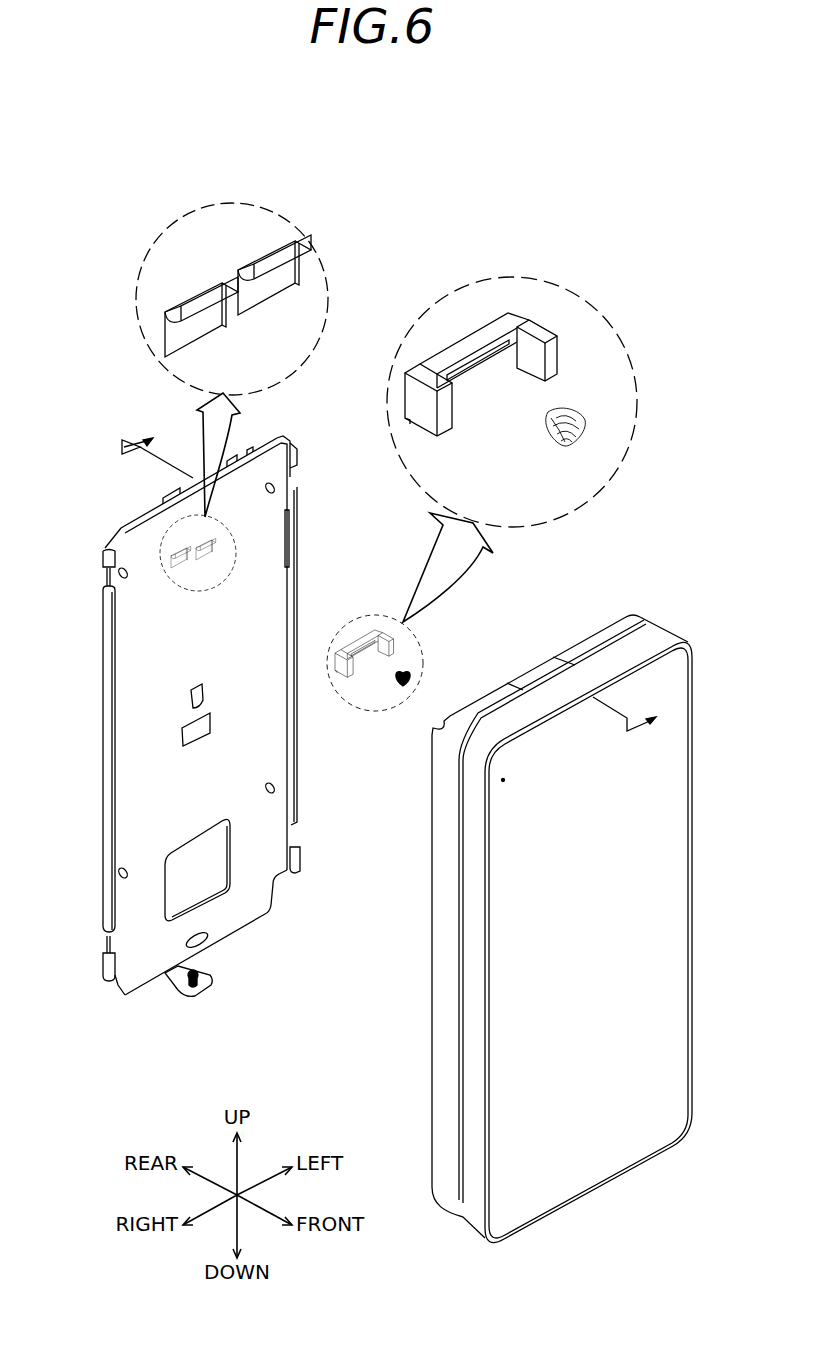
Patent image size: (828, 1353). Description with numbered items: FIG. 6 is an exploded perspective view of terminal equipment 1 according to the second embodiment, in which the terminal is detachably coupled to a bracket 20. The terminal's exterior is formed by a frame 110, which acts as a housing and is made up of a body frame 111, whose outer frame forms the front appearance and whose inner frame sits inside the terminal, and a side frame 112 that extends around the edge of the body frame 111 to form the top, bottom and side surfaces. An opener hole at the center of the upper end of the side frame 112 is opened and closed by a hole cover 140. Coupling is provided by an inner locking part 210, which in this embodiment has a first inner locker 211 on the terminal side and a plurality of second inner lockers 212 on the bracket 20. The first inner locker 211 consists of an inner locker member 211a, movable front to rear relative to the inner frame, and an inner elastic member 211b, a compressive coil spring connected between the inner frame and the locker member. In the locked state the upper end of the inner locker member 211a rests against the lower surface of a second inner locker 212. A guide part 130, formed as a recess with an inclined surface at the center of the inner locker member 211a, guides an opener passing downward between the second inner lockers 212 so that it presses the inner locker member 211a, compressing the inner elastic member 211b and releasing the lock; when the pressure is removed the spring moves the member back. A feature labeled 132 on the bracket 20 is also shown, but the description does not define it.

The terminal equipment 1 is at (399, 131).
The bracket 20 is at (120, 768).
The frame 110 is at (362, 790).
The body frame 111 is at (517, 840).
The side frame 112 is at (456, 795).
The guide part 130 is at (457, 351).
The fastening rail 132 is at (291, 488).
The hole cover 140 is at (548, 662).
The inner locking part 210 is at (590, 177).
The first inner locker 211 is at (637, 225).
The inner locker member 211a is at (545, 338).
The inner elastic member 211b is at (568, 414).
The second inner locker 212 is at (215, 322).